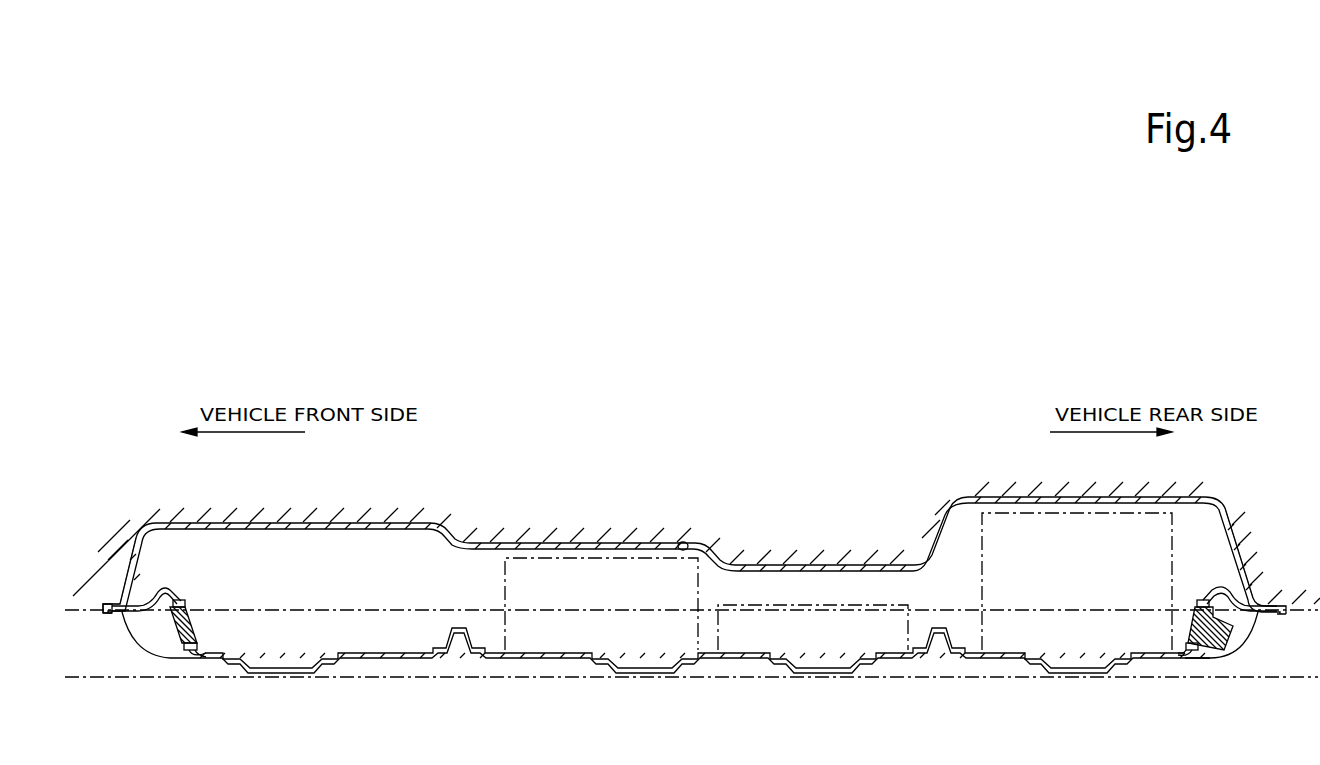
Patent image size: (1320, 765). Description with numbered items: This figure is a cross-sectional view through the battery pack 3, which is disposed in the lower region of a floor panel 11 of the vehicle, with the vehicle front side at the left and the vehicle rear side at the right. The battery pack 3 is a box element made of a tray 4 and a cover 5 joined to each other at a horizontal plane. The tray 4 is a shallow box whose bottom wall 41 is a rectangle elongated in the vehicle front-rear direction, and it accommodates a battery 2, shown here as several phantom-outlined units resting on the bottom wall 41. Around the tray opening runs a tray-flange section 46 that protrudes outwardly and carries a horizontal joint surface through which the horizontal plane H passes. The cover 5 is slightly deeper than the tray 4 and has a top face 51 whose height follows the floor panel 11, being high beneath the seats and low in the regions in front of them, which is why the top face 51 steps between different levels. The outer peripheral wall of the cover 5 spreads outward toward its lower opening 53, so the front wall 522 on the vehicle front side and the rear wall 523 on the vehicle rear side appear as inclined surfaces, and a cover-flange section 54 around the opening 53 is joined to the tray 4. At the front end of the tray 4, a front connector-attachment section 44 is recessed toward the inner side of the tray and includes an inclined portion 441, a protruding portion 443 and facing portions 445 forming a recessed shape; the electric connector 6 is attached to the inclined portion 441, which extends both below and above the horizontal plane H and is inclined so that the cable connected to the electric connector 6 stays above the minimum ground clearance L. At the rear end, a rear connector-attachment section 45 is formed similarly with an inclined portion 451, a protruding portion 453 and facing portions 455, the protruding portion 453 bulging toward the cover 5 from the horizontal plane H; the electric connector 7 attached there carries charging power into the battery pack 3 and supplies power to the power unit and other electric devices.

The battery 2 is at (590, 557).
The battery pack 3 is at (560, 512).
The tray 4 is at (702, 671).
The bottom wall 41 is at (360, 653).
The front connector-attachment section 44 is at (173, 597).
The inclined portion 441 is at (199, 649).
The protruding portion 443 is at (168, 597).
The facing portions 445 is at (155, 633).
The rear connector-attachment section 45 is at (1184, 642).
The inclined portion 451 is at (1187, 647).
The protruding portion 453 is at (1213, 592).
The facing portions 455 is at (1237, 640).
The tray-flange section 46 is at (108, 613).
The cover 5 is at (696, 533).
The top face 51 is at (512, 542).
The front wall 522 is at (130, 556).
The rear wall 523 is at (1256, 556).
The opening 53 is at (1250, 605).
The cover-flange section 54 is at (112, 596).
The electric connector 6 is at (176, 633).
The electric connector 7 is at (1214, 650).
The floor panel 11 is at (676, 541).
The horizontal plane H is at (930, 607).
The minimum ground clearance L is at (920, 680).